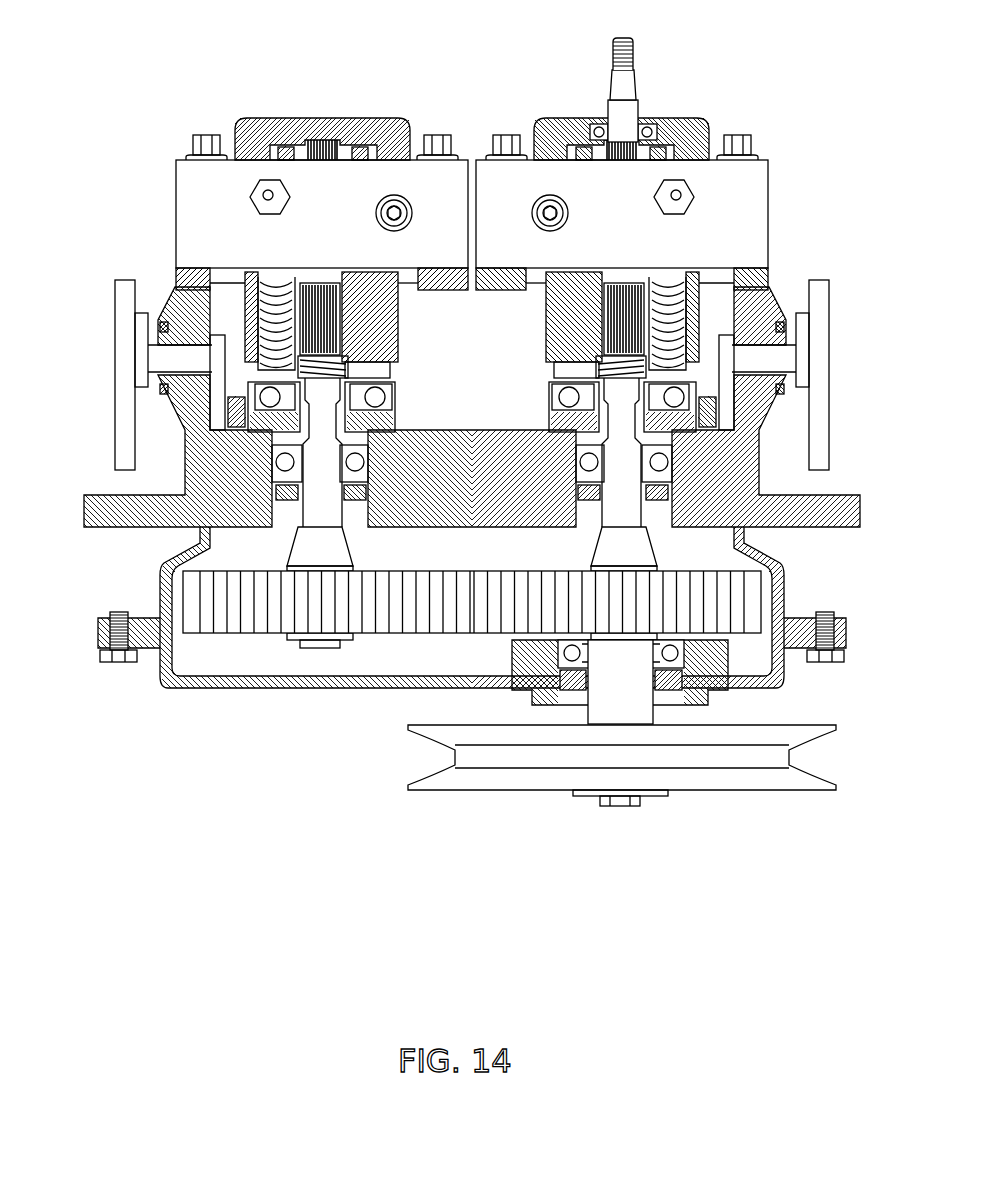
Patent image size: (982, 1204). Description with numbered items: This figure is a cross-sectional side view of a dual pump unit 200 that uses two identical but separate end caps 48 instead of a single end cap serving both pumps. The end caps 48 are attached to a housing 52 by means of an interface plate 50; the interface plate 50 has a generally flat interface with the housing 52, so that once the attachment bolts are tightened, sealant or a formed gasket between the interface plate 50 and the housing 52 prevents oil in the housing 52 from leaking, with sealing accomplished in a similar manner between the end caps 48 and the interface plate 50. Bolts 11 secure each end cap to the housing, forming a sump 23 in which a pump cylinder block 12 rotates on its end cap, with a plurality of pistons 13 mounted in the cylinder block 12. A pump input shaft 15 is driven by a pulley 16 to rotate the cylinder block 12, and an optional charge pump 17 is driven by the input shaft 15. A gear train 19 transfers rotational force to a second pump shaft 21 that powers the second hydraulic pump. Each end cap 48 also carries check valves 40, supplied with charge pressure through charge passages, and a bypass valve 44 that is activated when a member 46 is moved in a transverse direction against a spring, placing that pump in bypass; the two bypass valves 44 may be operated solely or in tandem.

The dual pump unit 200 is at (127, 87).
The bolts 11 is at (204, 134).
The charge pump 17 is at (237, 128).
The end caps 48 is at (176, 212).
The member 46 is at (274, 194).
The bypass valve 44 is at (257, 204).
The check valves 40 is at (395, 232).
The housing 52 is at (172, 298).
The interface plate 50 is at (772, 278).
The pump cylinder block 12 is at (398, 318).
The sump 23 is at (487, 359).
The pistons 13 is at (390, 372).
The second pump shaft 21 is at (333, 552).
The gear train 19 is at (487, 565).
The pump input shaft 15 is at (633, 694).
The pulley 16 is at (420, 790).